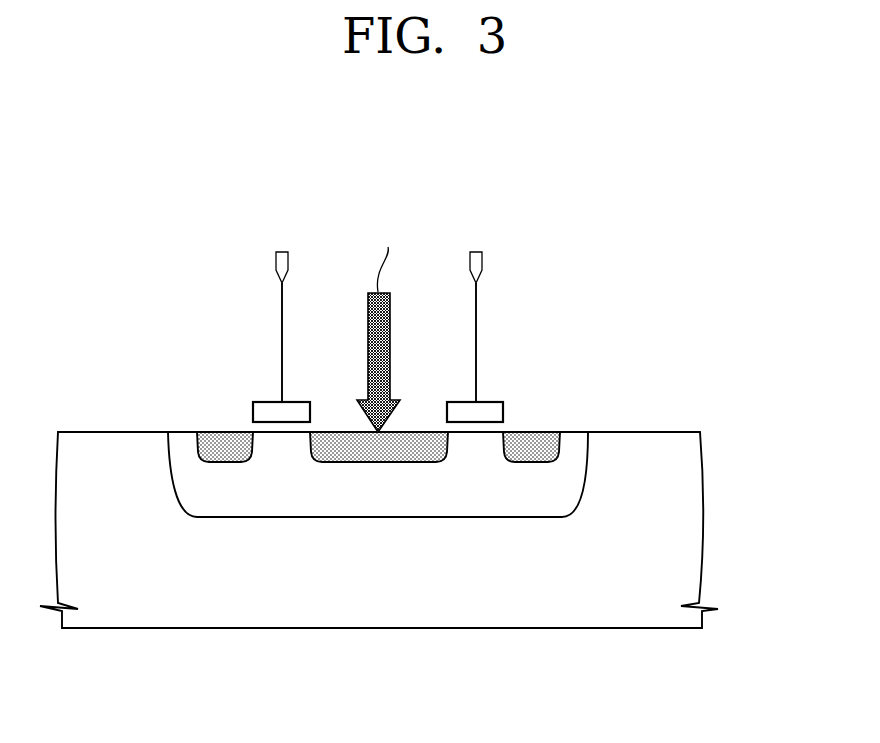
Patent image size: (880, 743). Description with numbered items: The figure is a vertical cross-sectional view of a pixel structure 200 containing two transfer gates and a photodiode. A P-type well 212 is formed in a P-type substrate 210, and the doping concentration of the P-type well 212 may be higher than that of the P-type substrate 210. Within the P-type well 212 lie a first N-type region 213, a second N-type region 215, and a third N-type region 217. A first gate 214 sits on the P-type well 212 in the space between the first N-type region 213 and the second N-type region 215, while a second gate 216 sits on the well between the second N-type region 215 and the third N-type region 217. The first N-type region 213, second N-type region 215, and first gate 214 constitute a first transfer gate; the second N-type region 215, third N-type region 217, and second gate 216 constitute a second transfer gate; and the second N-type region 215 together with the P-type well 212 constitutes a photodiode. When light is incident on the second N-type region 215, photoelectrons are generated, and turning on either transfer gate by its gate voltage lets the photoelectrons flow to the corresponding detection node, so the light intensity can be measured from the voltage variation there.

The image sensor pixel / semiconductor device 200 is at (645, 273).
The P-type substrate 210 is at (691, 565).
The P-type well 212 is at (579, 479).
The first N-type region 213 is at (225, 455).
The first gate 214 is at (253, 408).
The second N-type region 215 is at (387, 450).
The second gate 216 is at (503, 410).
The third N-type region 217 is at (533, 462).